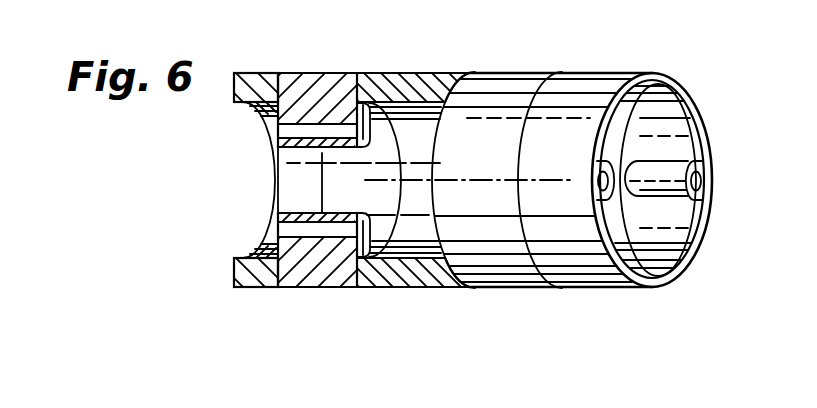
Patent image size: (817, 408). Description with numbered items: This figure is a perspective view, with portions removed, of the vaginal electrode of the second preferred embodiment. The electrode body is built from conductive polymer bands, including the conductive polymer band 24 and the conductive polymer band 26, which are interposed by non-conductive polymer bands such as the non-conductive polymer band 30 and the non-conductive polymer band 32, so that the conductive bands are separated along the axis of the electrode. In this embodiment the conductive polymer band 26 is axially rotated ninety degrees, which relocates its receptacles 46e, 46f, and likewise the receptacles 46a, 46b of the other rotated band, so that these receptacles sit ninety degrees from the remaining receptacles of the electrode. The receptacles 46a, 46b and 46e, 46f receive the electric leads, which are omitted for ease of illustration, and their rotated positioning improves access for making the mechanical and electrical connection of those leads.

The conductive polymer band 24 is at (301, 78).
The conductive polymer band 26 is at (589, 72).
The non-conductive polymer band 30 is at (255, 292).
The non-conductive polymer band 32 is at (455, 278).
The receptacle 46a is at (320, 132).
The receptacle 46b is at (333, 233).
The receptacle 46e is at (601, 201).
The receptacle 46f is at (663, 175).